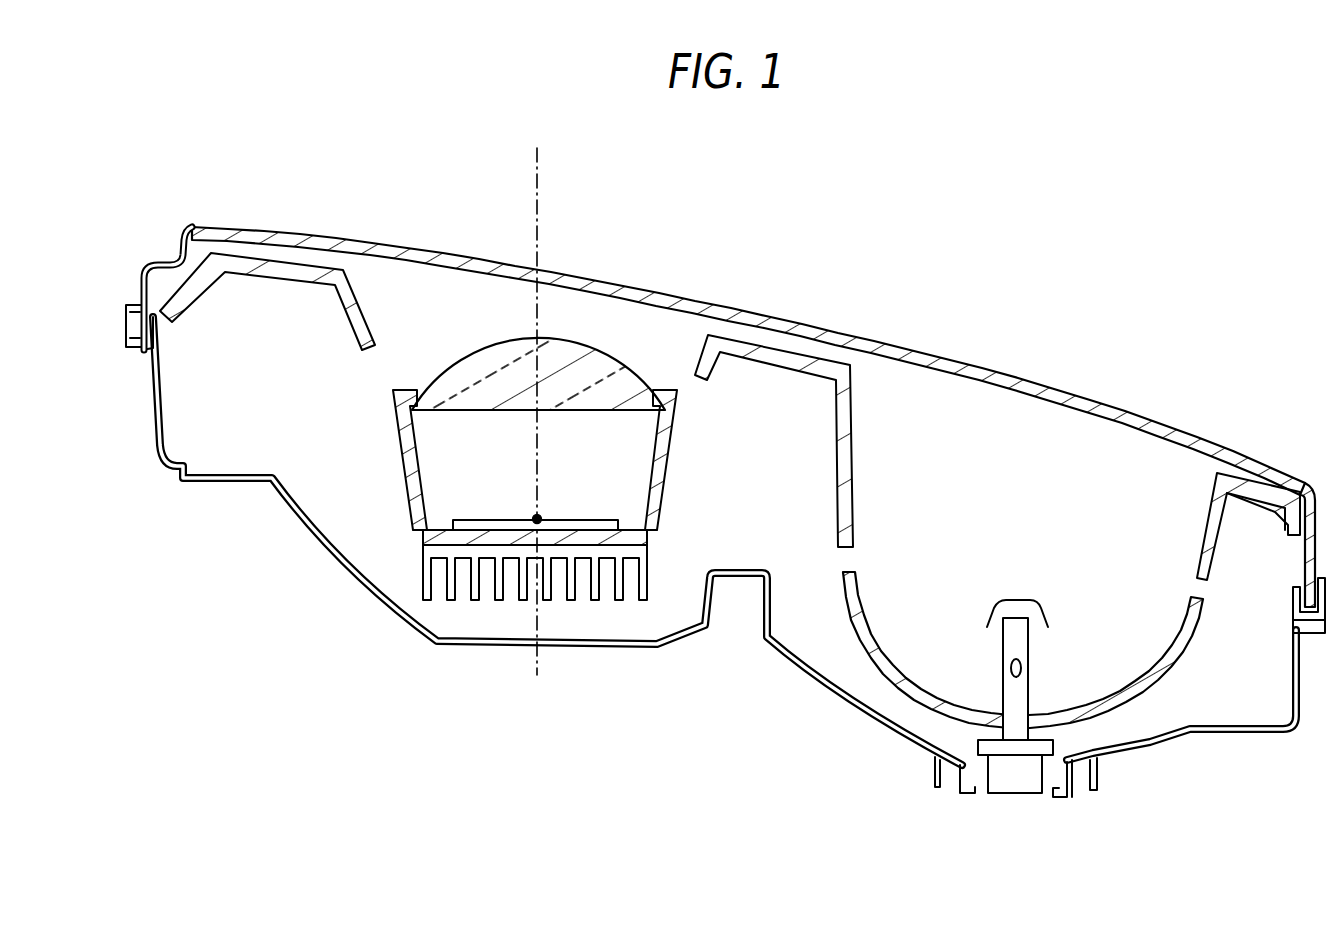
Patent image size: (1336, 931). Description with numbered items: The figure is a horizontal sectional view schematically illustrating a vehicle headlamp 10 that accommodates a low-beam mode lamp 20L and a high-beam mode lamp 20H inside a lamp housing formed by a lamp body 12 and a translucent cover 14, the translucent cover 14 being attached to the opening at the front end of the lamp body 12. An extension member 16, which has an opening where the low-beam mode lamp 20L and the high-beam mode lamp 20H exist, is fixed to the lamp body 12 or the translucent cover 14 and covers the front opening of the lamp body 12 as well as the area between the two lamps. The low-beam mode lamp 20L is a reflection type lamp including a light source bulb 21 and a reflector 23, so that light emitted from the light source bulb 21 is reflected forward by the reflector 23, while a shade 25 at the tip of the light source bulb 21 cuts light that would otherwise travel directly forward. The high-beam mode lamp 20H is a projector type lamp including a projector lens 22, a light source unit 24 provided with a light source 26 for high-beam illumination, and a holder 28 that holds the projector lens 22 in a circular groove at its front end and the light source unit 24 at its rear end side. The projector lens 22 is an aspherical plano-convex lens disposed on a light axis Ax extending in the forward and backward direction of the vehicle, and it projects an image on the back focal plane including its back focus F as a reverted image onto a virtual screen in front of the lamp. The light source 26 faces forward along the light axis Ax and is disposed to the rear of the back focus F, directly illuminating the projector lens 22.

The vehicle headlamp 10 is at (725, 542).
The lamp body 12 is at (1254, 731).
The translucent cover 14 is at (1256, 466).
The extension member 16 is at (782, 356).
The high-beam mode lamp 20H is at (569, 411).
The low-beam mode lamp 20L is at (1023, 570).
The light source bulb 21 is at (1032, 667).
The projector lens 22 is at (440, 378).
The reflector 23 is at (914, 664).
The light source unit 24 is at (650, 543).
The shade 25 is at (1042, 606).
The light source 26 is at (486, 518).
The holder 28 is at (668, 470).
The back focus F is at (540, 518).
The light axis Ax is at (537, 150).